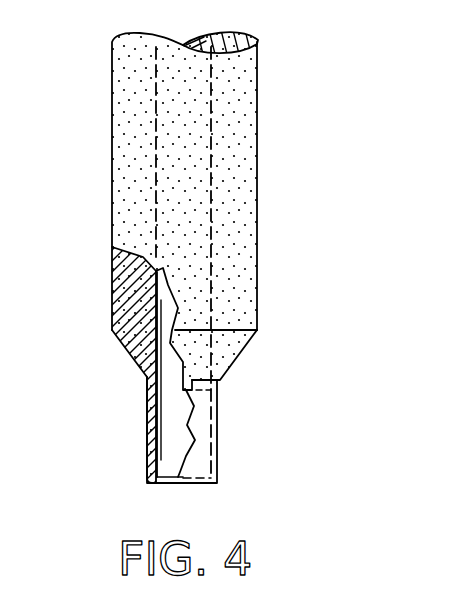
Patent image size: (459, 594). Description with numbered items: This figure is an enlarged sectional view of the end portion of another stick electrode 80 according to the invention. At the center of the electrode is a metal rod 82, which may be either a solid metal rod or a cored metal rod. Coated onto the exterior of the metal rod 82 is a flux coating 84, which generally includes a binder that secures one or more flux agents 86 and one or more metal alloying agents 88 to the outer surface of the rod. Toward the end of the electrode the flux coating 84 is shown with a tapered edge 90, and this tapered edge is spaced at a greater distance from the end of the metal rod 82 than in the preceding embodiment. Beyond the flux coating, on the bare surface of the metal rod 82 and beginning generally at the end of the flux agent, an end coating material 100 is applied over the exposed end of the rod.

The stick electrode 80 is at (290, 126).
The metal rod 82 is at (170, 402).
The flux coating 84 is at (112, 120).
The flux agents 86 is at (126, 174).
The metal alloying agents 88 is at (240, 160).
The tapered edge 90 is at (240, 357).
The end coating material 100 is at (218, 423).